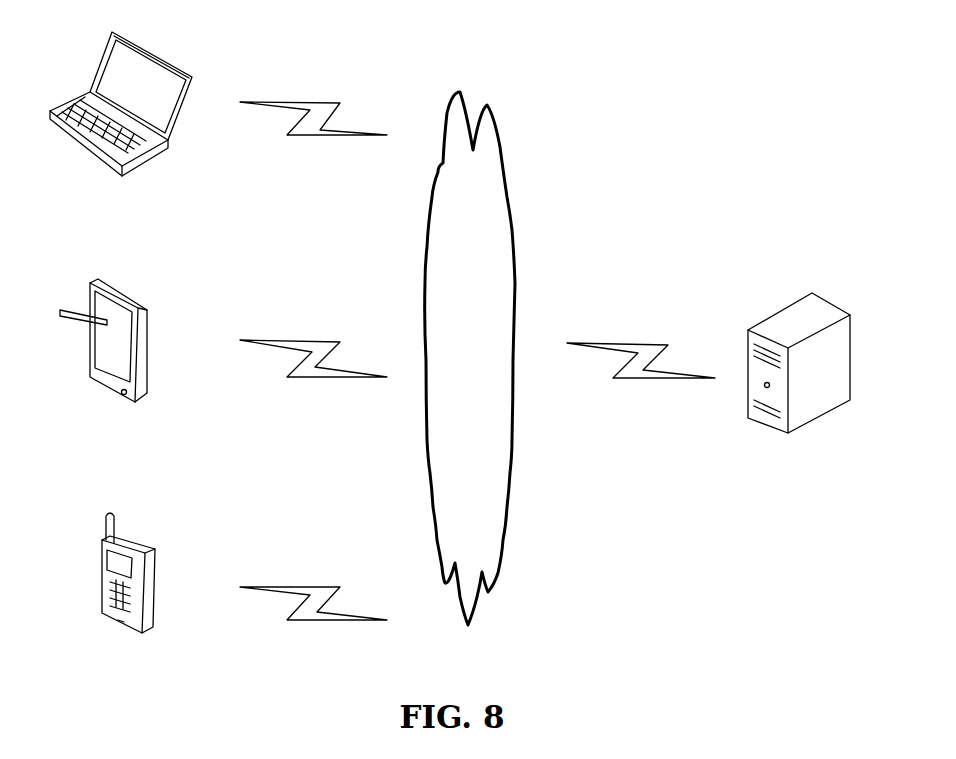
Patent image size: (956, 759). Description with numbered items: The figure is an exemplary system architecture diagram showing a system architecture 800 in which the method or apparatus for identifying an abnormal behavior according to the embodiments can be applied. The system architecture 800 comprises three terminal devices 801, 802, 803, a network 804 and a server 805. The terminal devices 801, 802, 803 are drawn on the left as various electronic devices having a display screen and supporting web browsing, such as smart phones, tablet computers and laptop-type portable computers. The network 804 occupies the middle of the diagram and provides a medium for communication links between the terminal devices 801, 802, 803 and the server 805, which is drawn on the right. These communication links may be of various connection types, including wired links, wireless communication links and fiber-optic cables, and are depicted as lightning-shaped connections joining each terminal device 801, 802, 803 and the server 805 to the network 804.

The system architecture 800 is at (745, 27).
The terminal device 801 is at (128, 591).
The terminal device 802 is at (103, 361).
The terminal device 803 is at (121, 120).
The network 804 is at (470, 358).
The server 805 is at (799, 384).